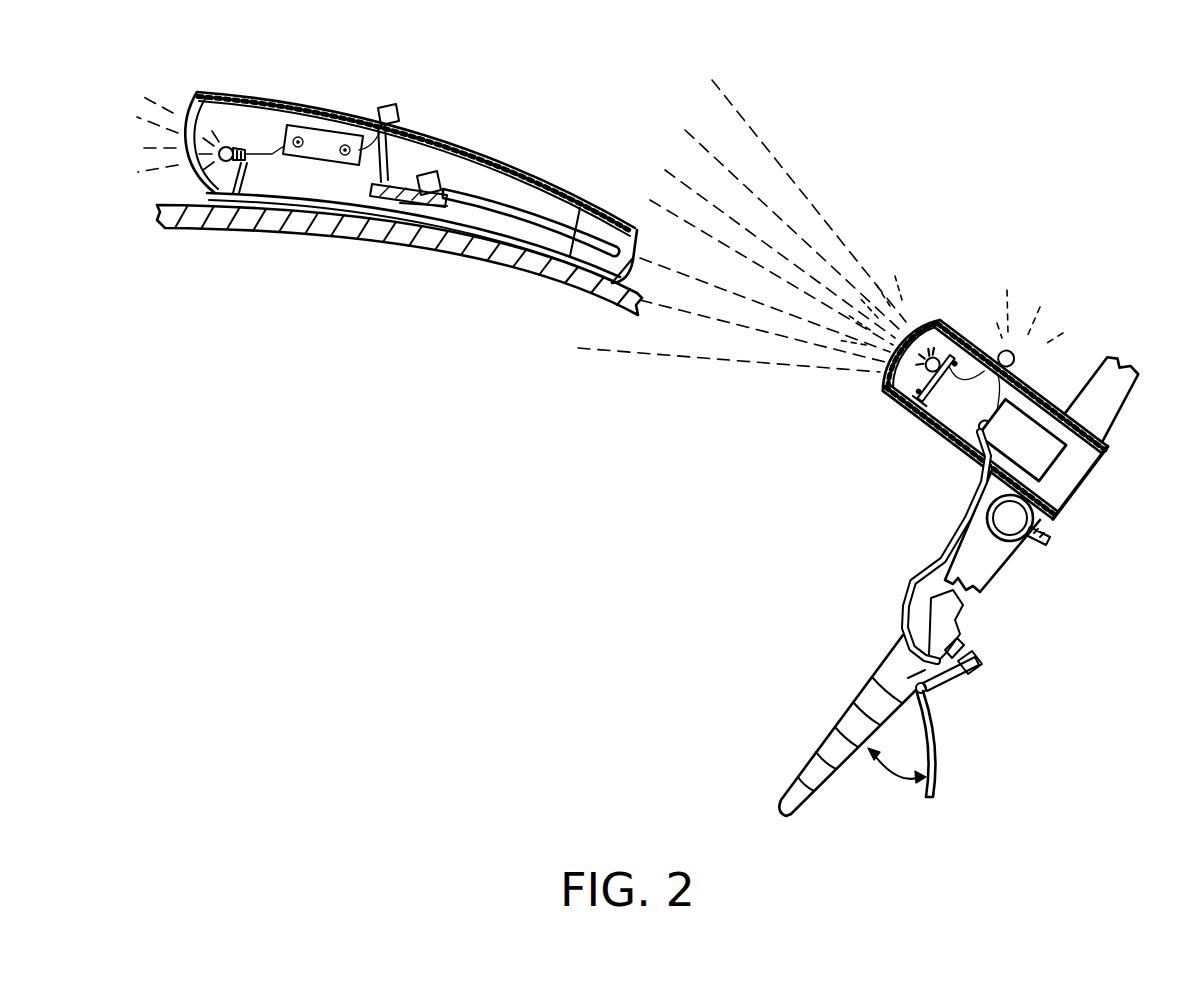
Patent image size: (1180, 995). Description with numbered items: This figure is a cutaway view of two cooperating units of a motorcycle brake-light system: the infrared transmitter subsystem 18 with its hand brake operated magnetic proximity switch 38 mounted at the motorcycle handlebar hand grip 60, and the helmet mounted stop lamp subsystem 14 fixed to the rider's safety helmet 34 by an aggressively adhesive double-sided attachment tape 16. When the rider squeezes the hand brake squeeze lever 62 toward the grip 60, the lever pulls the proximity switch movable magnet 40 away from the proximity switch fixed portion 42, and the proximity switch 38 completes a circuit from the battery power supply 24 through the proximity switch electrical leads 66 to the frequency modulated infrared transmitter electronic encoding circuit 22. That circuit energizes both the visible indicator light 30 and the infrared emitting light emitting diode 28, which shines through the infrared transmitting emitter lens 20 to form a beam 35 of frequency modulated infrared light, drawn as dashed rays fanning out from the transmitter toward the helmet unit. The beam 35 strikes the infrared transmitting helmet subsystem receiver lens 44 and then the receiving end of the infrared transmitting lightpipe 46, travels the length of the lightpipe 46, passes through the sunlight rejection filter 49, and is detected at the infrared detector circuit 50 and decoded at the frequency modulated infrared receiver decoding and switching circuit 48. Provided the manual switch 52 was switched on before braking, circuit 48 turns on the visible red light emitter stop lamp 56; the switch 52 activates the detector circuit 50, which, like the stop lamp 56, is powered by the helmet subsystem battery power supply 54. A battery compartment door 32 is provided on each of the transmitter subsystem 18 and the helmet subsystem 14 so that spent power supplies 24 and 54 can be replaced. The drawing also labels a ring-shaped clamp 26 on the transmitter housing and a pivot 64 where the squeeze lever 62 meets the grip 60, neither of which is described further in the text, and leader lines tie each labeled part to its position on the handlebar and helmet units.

The helmet mounted stop lamp subsystem 14 is at (248, 68).
The double-sided attachment tape 16 is at (532, 270).
The infrared transmitter subsystem 18 is at (954, 524).
The infrared transmitting emitter lens 20 is at (912, 316).
The frequency modulated infrared transmitter electronic encoding circuit 22 is at (948, 340).
The battery power supply 24 is at (1026, 408).
The clamp ring 26 is at (1044, 523).
The infrared emitting light emitting diode 28 is at (928, 372).
The visible indicator light 30 is at (1007, 349).
The battery compartment door 32 is at (326, 103).
The safety helmet 34 is at (272, 242).
The beam of frequency modulated infrared light 35 is at (825, 208).
The hand brake operated magnetic proximity switch 38 is at (1002, 698).
The proximity switch movable magnet 40 is at (984, 658).
The proximity switch fixed portion 42 is at (964, 643).
The infrared transmitting helmet subsystem receiver lens 44 is at (638, 255).
The infrared transmitting lightpipe 46 is at (534, 206).
The frequency modulated infrared receiver decoding and switching circuit 48 is at (428, 208).
The sunlight rejection filter 49 is at (468, 160).
The infrared detector circuit 50 is at (435, 172).
The manual switch 52 is at (395, 108).
The helmet subsystem battery power supply 54 is at (300, 124).
The visible light emitter stop lamp 56 is at (225, 148).
The handlebar hand grip 60 is at (860, 660).
The hand brake squeeze lever 62 is at (937, 757).
The pivot 64 is at (955, 686).
The proximity switch electrical leads 66 is at (936, 550).